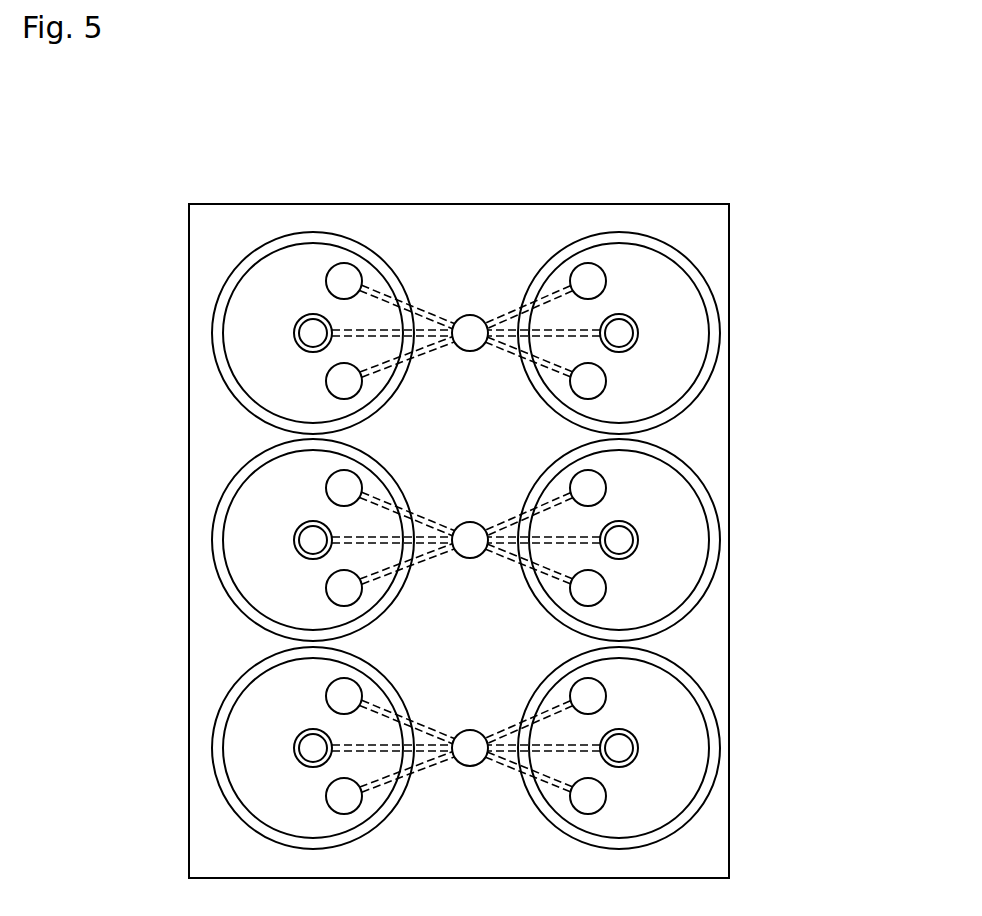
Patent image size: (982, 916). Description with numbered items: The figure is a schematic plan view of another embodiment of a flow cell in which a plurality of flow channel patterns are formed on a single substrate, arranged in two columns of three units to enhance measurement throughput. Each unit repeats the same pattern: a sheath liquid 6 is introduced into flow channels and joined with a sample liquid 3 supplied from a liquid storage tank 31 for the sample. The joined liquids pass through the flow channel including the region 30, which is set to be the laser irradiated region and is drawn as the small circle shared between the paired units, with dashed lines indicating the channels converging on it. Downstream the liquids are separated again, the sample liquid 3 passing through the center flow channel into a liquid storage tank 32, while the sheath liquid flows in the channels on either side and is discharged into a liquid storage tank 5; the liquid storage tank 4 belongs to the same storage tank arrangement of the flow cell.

The sample liquid 3 is at (737, 391).
The liquid storage tank 4 is at (691, 276).
The liquid storage tank 5 is at (233, 286).
The sheath liquid 6 is at (685, 387).
The region 30 is at (498, 246).
The liquid storage tank for a sample 31 is at (733, 269).
The liquid storage tank 32 is at (218, 393).